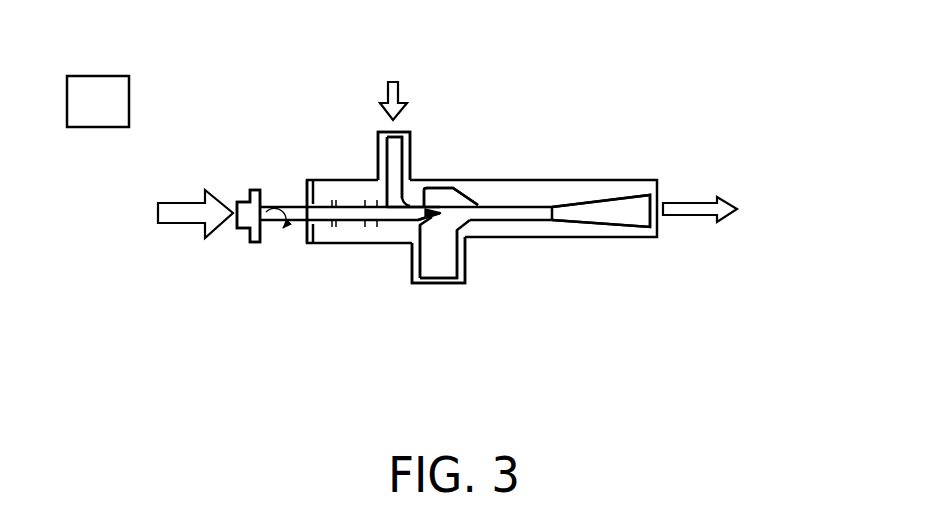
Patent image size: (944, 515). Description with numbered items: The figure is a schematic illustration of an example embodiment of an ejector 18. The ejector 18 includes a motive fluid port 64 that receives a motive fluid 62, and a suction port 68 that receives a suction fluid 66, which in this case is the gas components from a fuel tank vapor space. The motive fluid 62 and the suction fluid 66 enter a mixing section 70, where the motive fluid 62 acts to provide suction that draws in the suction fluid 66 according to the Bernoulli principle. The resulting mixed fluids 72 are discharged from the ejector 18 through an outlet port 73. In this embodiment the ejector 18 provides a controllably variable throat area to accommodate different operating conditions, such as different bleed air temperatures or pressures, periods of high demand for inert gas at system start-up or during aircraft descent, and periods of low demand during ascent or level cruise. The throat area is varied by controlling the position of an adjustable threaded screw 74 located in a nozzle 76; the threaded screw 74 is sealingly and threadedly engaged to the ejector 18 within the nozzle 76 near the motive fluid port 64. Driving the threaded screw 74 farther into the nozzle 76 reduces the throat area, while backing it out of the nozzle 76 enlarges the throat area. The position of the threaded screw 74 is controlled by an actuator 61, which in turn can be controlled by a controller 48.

The ejector 18 is at (735, 133).
The controller 48 is at (129, 102).
The actuator 61 is at (175, 214).
The motive fluid 62 is at (392, 82).
The motive fluid port 64 is at (398, 140).
The suction fluid 66 is at (438, 288).
The suction port 68 is at (440, 263).
The mixing section 70 is at (483, 187).
The mixed fluids 72 is at (716, 207).
The outlet port 73 is at (648, 207).
The adjustable threaded screw 74 is at (309, 180).
The nozzle 76 is at (397, 231).